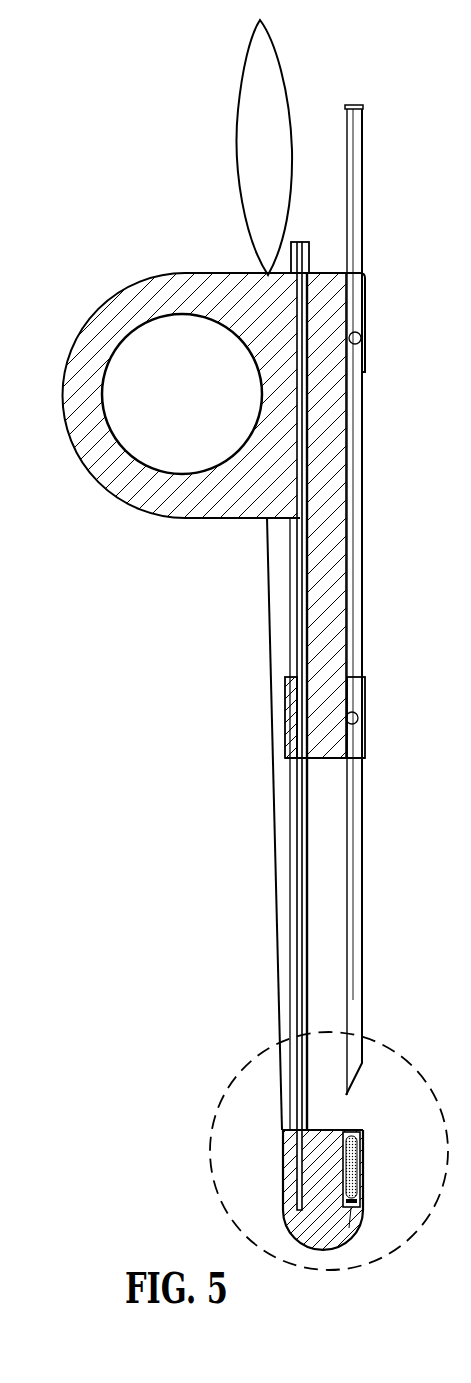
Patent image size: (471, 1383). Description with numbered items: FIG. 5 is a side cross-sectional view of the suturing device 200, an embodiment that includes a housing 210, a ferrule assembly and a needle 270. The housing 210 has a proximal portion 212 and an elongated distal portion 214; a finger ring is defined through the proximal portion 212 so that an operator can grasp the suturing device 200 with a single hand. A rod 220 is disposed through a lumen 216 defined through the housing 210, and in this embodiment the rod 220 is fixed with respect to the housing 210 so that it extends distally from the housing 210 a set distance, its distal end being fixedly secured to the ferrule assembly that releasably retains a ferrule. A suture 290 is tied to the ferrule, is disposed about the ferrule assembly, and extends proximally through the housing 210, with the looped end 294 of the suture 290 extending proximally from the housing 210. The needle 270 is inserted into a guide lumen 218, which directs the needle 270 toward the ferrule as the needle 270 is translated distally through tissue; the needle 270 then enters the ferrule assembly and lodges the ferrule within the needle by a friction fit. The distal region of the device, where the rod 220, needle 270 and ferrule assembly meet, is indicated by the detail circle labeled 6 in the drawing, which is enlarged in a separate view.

The suturing device 200 is at (121, 224).
The housing 210 is at (112, 500).
The proximal portion 212 is at (65, 367).
The elongated distal portion 214 is at (325, 622).
The lumen 216 is at (291, 311).
The guide lumen 218 is at (352, 697).
The rod 220 is at (288, 890).
The needle 270 is at (362, 892).
The suture 290 is at (272, 712).
The looped end 294 is at (291, 62).
The detail view of FIG. 6 is at (240, 1072).